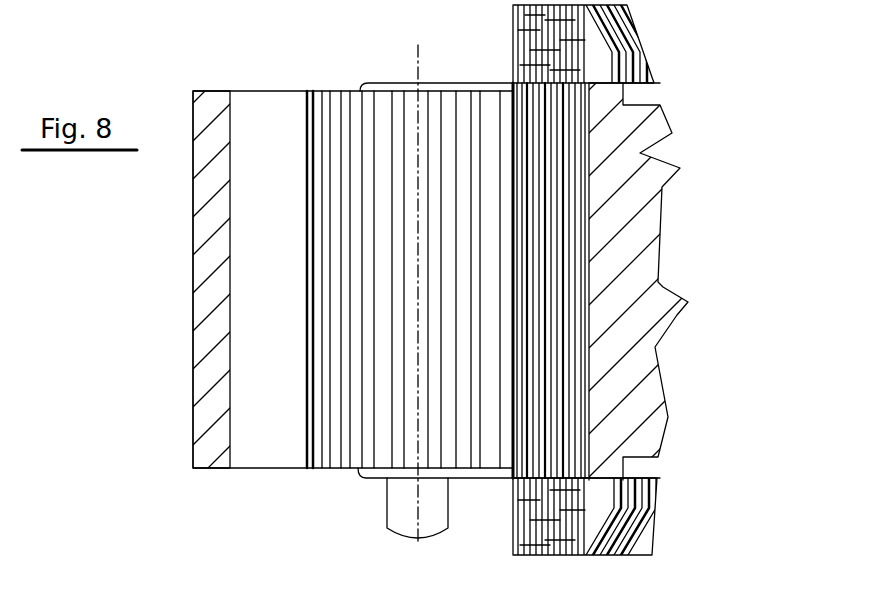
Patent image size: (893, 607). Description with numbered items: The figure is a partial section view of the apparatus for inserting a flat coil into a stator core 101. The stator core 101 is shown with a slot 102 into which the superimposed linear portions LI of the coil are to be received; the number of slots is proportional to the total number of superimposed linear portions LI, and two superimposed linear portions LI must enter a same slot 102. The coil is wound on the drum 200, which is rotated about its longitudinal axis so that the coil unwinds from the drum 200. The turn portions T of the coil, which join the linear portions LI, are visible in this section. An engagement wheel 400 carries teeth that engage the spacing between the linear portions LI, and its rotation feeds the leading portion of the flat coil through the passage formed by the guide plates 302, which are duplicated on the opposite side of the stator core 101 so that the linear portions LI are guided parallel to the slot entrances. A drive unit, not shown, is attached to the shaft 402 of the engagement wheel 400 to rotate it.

The stator core 101 is at (204, 255).
The slot 102 is at (278, 125).
The drum 200 is at (632, 212).
The guide plate 302 is at (387, 90).
The engagement wheel 400 is at (463, 137).
The shaft 402 is at (398, 522).
The linear portions LI is at (565, 300).
The turn portions T is at (613, 42).